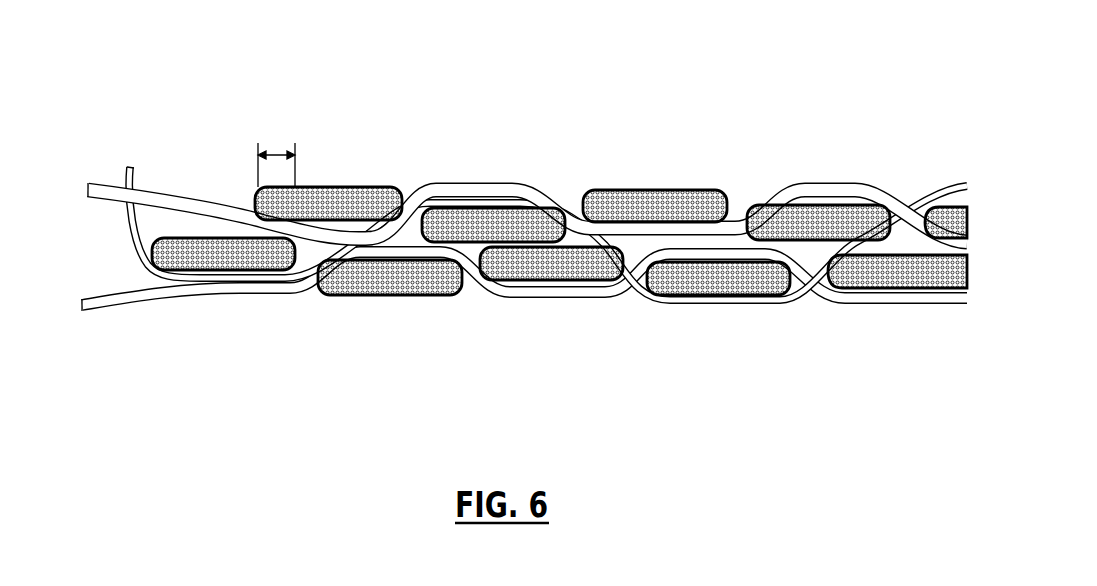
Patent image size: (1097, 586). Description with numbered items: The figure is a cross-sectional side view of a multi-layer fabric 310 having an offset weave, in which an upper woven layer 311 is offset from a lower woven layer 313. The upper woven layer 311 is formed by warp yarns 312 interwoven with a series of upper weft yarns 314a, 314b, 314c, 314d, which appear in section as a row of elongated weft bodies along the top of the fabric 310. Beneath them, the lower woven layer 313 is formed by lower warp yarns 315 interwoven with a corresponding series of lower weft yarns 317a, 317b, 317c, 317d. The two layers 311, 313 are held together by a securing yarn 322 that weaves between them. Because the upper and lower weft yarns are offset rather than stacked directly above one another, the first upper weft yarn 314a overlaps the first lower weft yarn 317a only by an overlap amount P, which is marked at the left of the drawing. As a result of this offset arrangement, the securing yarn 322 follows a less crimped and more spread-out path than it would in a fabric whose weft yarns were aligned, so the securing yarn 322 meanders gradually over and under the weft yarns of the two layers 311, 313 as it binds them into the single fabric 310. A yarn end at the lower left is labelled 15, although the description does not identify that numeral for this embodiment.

The fabric 310 is at (258, 80).
The upper woven layer 311 is at (765, 150).
The warp yarns 312 is at (105, 187).
The lower woven layer 313 is at (748, 383).
The first upper weft yarn 314a is at (317, 200).
The upper weft yarn 314b is at (488, 217).
The upper weft yarn 314c is at (648, 205).
The upper weft yarn 314d is at (842, 225).
The lower warp yarns 315 is at (928, 293).
The first lower weft yarn 317a is at (230, 262).
The lower weft yarn 317b is at (386, 268).
The lower weft yarn 317c is at (558, 262).
The lower weft yarn 317d is at (762, 285).
The securing yarn 322 is at (140, 180).
The yarn 15 is at (108, 295).
The overlap amount P is at (273, 152).